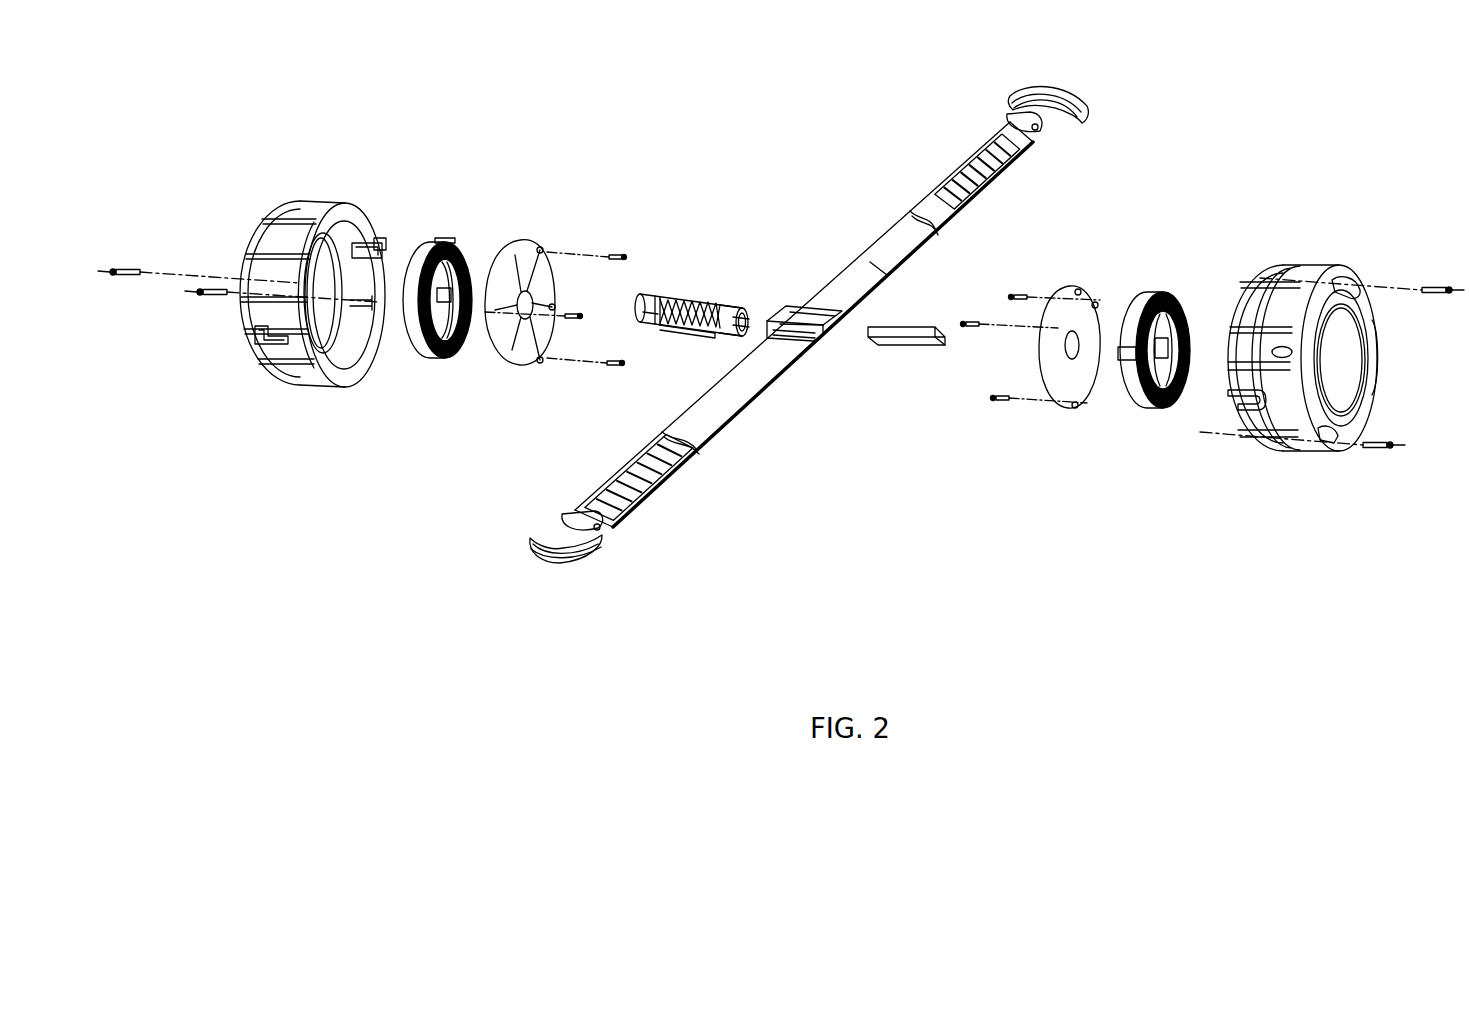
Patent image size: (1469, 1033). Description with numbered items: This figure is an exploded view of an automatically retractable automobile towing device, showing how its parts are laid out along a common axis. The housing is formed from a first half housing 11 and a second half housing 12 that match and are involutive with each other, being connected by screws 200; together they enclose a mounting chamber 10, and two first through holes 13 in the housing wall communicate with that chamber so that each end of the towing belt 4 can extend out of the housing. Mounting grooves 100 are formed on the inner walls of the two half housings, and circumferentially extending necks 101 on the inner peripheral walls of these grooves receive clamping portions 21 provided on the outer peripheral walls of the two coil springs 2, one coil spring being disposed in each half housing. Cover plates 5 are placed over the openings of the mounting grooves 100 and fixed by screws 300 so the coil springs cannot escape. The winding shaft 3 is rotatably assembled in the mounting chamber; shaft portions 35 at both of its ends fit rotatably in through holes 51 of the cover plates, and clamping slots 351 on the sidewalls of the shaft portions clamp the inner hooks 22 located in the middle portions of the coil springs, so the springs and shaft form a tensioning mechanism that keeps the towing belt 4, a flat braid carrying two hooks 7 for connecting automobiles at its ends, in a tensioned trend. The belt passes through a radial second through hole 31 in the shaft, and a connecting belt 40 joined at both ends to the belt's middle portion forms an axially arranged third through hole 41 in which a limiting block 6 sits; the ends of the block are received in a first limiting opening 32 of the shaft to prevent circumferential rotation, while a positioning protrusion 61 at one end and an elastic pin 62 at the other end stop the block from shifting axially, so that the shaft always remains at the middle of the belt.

The coil spring 2 is at (819, 280).
The winding shaft 3 is at (718, 300).
The towing belt 4 is at (804, 324).
The cover plate 5 is at (819, 346).
The limiting block 6 is at (914, 370).
The hook 7 is at (603, 548).
The mounting chamber 10 is at (346, 287).
The first half housing 11 is at (298, 212).
The second half housing 12 is at (1263, 452).
The first through hole 13 is at (274, 346).
The clamping portion 21 is at (452, 245).
The inner hook 22 is at (447, 296).
The second through hole 31 is at (687, 330).
The first limiting opening 32 is at (658, 312).
The shaft portion 35 is at (770, 265).
The connecting belt 40 is at (841, 371).
The third through hole 41 is at (833, 330).
The through hole 51 is at (531, 293).
The positioning protrusion 61 is at (938, 346).
The elastic pin 62 is at (887, 273).
The mounting groove 100 is at (382, 245).
The neck 101 is at (355, 247).
The screw 200 is at (127, 270).
The screw 300 is at (618, 255).
The clamping slot 351 is at (750, 318).